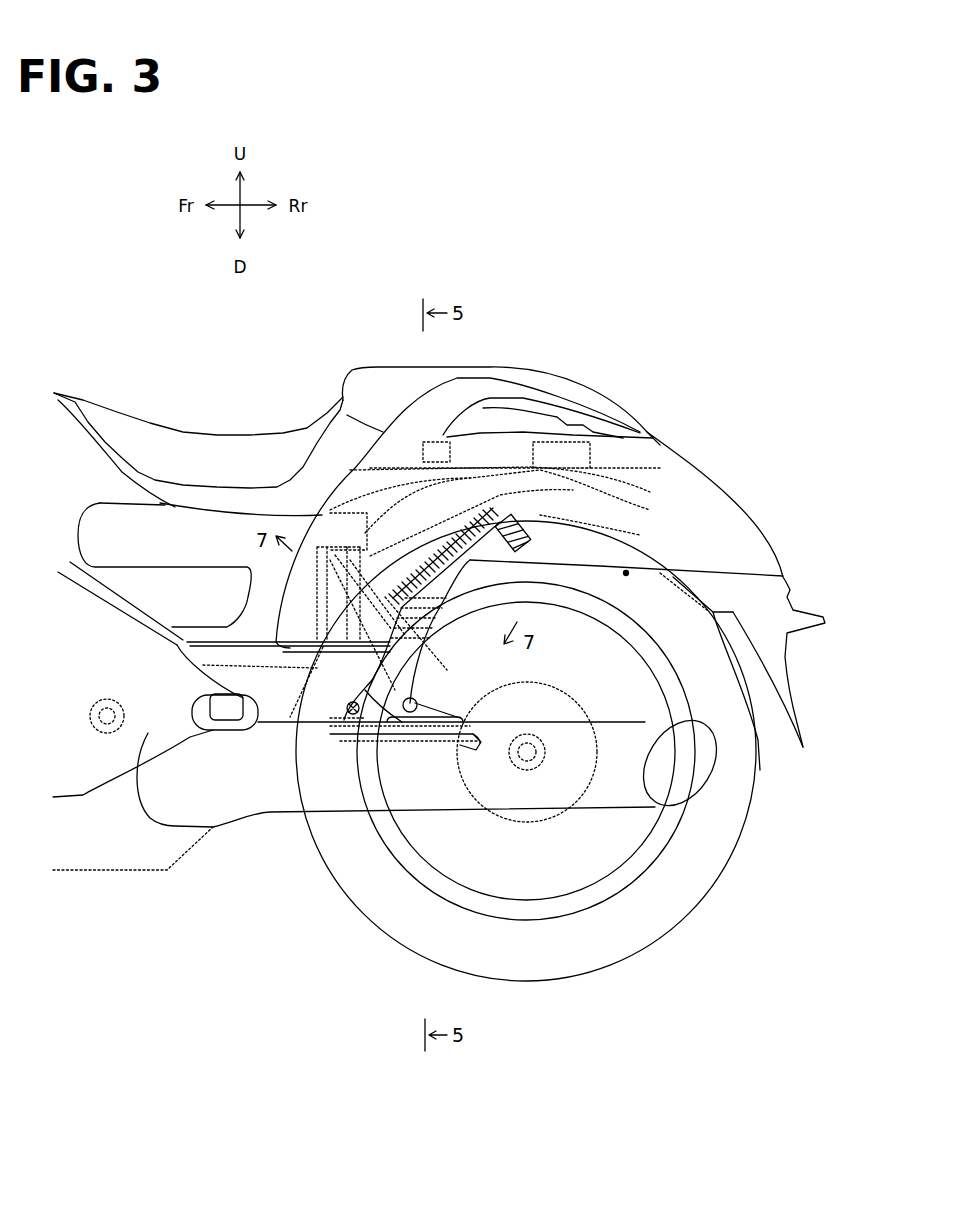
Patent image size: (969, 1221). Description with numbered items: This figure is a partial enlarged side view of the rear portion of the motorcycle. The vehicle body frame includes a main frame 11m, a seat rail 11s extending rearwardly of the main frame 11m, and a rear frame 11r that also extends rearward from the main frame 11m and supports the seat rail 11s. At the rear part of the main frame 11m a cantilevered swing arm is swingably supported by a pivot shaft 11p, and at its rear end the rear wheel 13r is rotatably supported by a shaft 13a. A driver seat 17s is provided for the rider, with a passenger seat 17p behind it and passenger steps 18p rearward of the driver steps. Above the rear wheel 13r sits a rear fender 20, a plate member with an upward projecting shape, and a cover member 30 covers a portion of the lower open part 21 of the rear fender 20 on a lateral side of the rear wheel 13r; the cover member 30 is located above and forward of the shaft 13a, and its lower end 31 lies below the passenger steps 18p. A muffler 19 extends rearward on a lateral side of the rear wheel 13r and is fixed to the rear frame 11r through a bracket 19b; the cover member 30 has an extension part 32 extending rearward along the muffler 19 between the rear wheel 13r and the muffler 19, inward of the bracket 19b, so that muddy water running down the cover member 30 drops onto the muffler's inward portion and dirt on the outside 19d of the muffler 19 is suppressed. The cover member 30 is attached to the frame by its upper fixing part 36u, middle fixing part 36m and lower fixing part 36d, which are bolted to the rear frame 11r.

The main frame 11m is at (92, 615).
The driver seat 17s is at (205, 445).
The passenger seat 17p is at (494, 372).
The seat rail 11s is at (677, 457).
The rear fender 20 is at (708, 498).
The rear frame 11r is at (650, 510).
The upper fixing part 36u is at (527, 537).
The lower open part 21 is at (629, 575).
The cover member 30 is at (440, 617).
The middle fixing part 36m is at (385, 597).
The lower fixing part 36d is at (346, 705).
The bracket 19b is at (466, 708).
The muffler 19 is at (715, 768).
The rear wheel 13r is at (688, 910).
The shaft 13a is at (533, 757).
The extension part 32 is at (424, 741).
The outside of the muffler 19d is at (392, 736).
The lower end 31 is at (343, 712).
The passenger steps 18p is at (228, 708).
The pivot shaft 11p is at (107, 735).